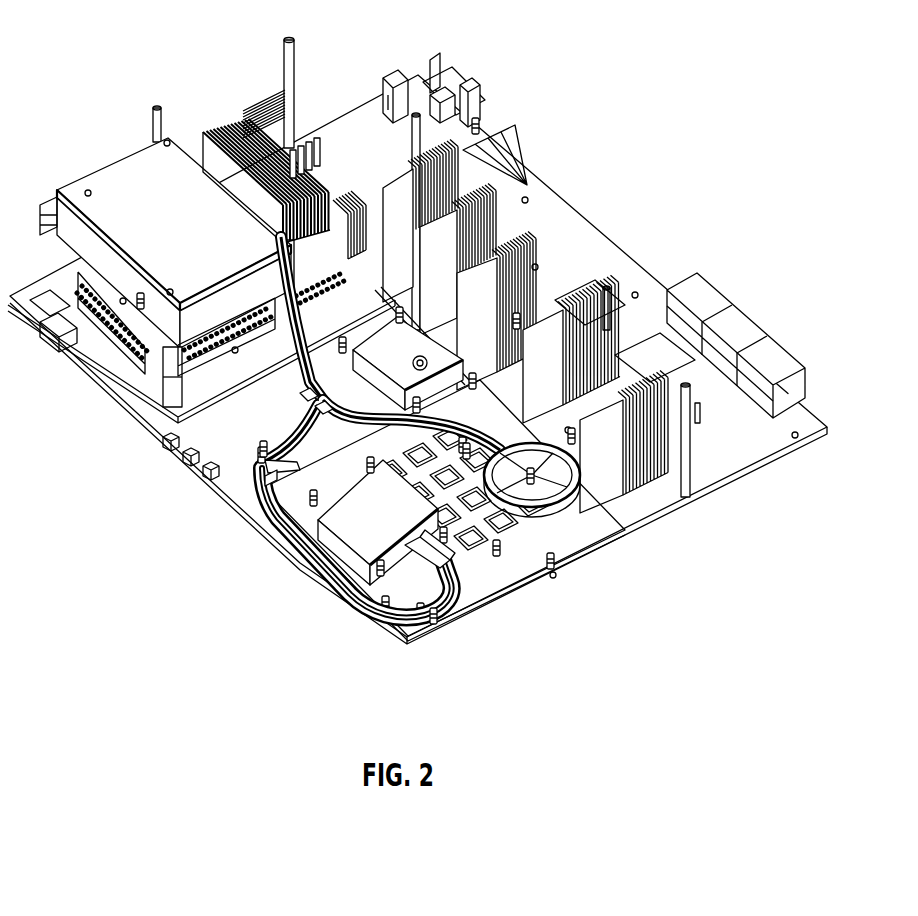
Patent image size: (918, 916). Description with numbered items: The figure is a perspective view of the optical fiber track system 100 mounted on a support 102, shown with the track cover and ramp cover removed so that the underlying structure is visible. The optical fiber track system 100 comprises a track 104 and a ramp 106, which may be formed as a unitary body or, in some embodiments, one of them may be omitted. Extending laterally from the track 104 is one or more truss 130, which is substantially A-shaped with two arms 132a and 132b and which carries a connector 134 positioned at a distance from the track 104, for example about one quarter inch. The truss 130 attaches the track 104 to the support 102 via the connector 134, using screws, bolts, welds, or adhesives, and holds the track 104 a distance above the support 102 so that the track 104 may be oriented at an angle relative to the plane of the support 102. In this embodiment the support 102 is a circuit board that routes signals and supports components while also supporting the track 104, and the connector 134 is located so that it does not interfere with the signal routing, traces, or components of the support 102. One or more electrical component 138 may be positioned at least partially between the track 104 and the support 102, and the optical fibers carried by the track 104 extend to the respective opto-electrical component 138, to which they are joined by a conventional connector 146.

The optical fiber track system 100 is at (297, 386).
The support 102 is at (768, 467).
The track 104 is at (340, 600).
The ramp 106 is at (290, 338).
The truss 130 is at (258, 440).
The arm 132a is at (262, 482).
The arm 132b is at (278, 467).
The connector 134 is at (258, 462).
The electrical component 138 is at (427, 357).
The connector 146 is at (457, 390).